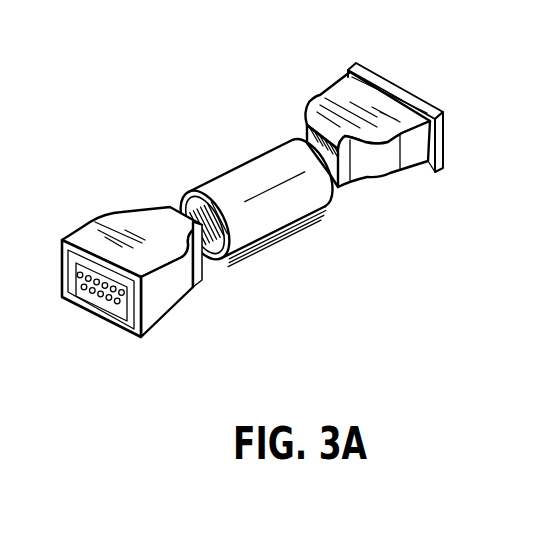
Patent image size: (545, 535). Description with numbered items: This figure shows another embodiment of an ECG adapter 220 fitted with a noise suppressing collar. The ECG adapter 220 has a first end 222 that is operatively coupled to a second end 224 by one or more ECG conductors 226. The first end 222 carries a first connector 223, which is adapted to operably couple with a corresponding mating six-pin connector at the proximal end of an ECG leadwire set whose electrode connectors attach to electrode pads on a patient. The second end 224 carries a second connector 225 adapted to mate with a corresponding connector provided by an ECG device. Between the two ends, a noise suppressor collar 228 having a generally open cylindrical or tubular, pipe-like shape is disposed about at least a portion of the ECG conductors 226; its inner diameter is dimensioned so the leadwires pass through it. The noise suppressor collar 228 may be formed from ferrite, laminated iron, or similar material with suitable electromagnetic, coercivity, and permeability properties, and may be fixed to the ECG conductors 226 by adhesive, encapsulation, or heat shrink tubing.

The ECG adapter 220 is at (213, 103).
The first end 222 is at (107, 225).
The first connector 223 is at (98, 290).
The second end 224 is at (358, 105).
The second connector 225 is at (420, 100).
The ECG conductors 226 is at (226, 256).
The noise suppressor collar 228 is at (280, 218).